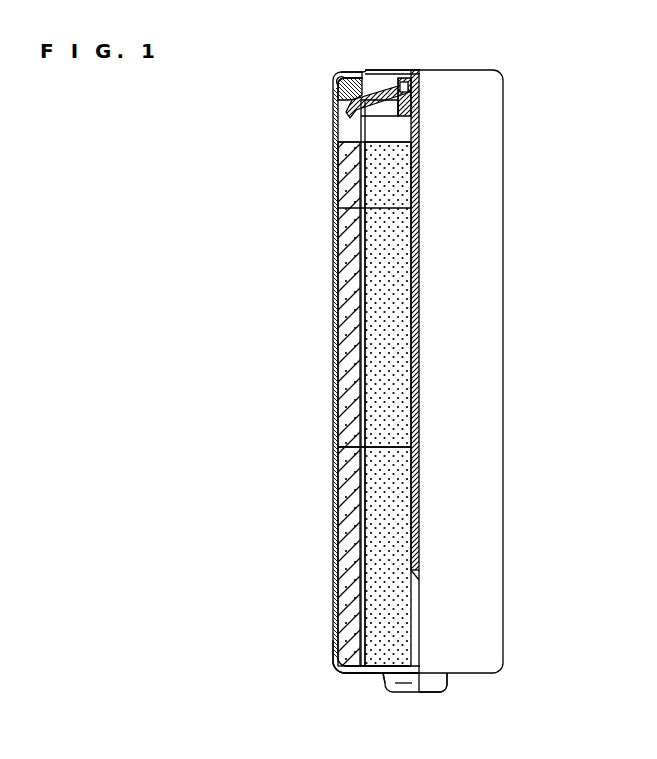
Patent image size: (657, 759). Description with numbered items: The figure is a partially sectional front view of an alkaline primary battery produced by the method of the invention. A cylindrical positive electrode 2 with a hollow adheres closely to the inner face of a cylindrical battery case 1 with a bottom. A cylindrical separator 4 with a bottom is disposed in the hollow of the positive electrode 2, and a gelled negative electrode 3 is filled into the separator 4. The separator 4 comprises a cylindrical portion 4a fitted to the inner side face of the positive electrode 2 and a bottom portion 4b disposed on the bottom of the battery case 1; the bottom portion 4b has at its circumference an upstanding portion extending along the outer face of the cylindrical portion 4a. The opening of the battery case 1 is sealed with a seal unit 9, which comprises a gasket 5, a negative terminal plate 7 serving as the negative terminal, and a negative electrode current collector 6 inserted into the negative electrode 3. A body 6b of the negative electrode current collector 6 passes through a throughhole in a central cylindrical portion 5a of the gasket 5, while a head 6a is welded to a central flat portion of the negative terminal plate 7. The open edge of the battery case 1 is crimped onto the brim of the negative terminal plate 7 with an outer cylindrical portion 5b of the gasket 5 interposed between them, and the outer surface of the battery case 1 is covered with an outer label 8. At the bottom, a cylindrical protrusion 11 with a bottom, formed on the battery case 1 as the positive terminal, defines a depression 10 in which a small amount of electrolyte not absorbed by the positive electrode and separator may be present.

The battery case 1 is at (336, 393).
The positive electrode 2 is at (338, 575).
The negative electrode 3 is at (385, 320).
The separator 4 is at (281, 664).
The cylindrical portion 4a is at (336, 655).
The bottom portion 4b is at (380, 677).
The gasket 5 is at (340, 112).
The central cylindrical portion 5a is at (420, 100).
The outer cylindrical portion 5b is at (420, 92).
The negative electrode current collector 6 is at (340, 209).
The head 6a is at (411, 72).
The body 6b is at (340, 450).
The negative terminal plate 7 is at (386, 70).
The outer label 8 is at (336, 627).
The seal unit 9 is at (290, 53).
The depression 10 is at (396, 685).
The cylindrical protrusion 11 is at (420, 695).